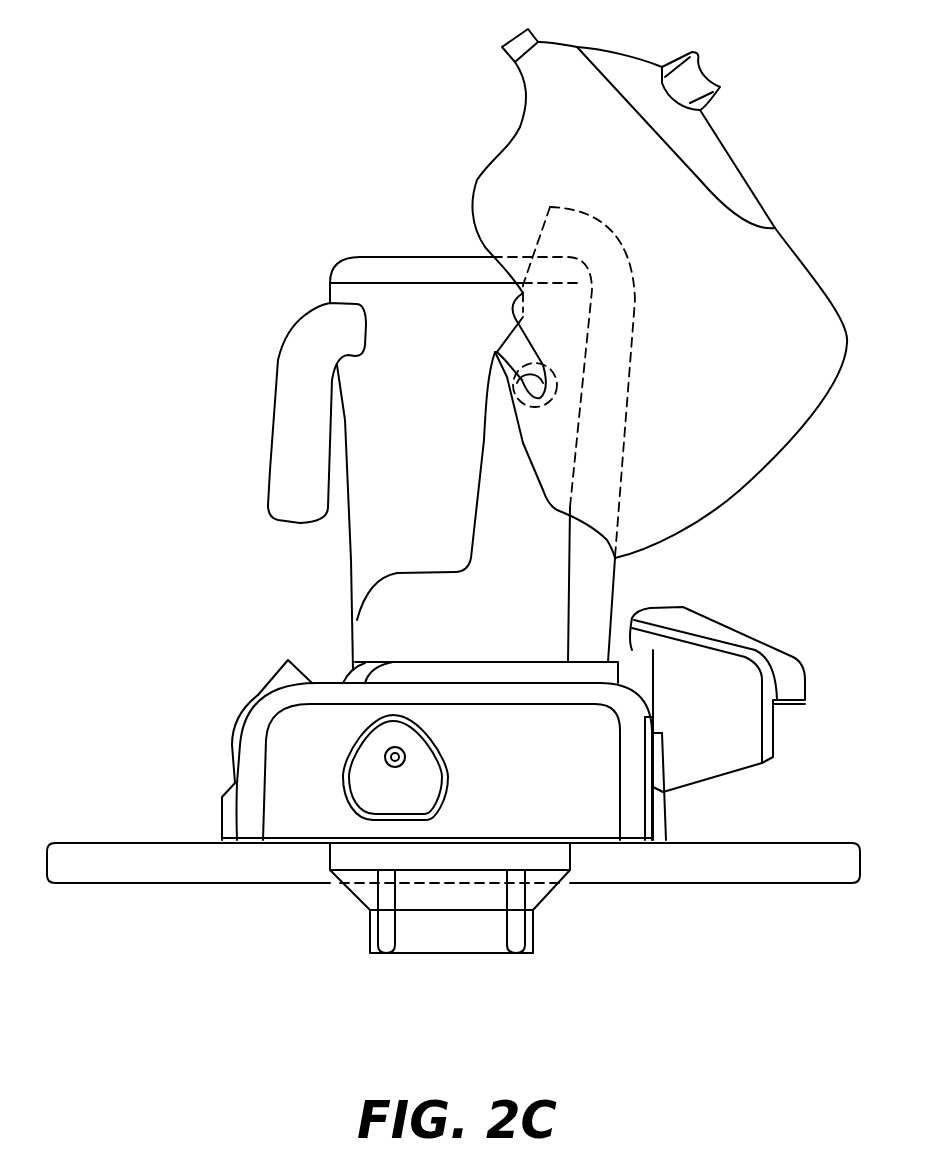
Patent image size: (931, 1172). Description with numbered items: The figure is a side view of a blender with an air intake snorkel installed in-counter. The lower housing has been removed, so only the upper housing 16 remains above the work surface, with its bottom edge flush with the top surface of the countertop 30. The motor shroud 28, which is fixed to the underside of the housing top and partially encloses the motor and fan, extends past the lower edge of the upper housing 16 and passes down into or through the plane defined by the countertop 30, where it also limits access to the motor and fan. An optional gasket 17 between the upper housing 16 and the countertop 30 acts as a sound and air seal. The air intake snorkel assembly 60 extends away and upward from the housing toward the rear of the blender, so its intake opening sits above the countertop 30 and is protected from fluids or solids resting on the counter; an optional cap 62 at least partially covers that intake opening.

The upper housing 16 is at (536, 786).
The gasket 17 is at (668, 844).
The motor shroud 28 is at (462, 942).
The countertop 30 is at (142, 874).
The air intake snorkel assembly 60 is at (655, 787).
The cap 62 is at (717, 714).